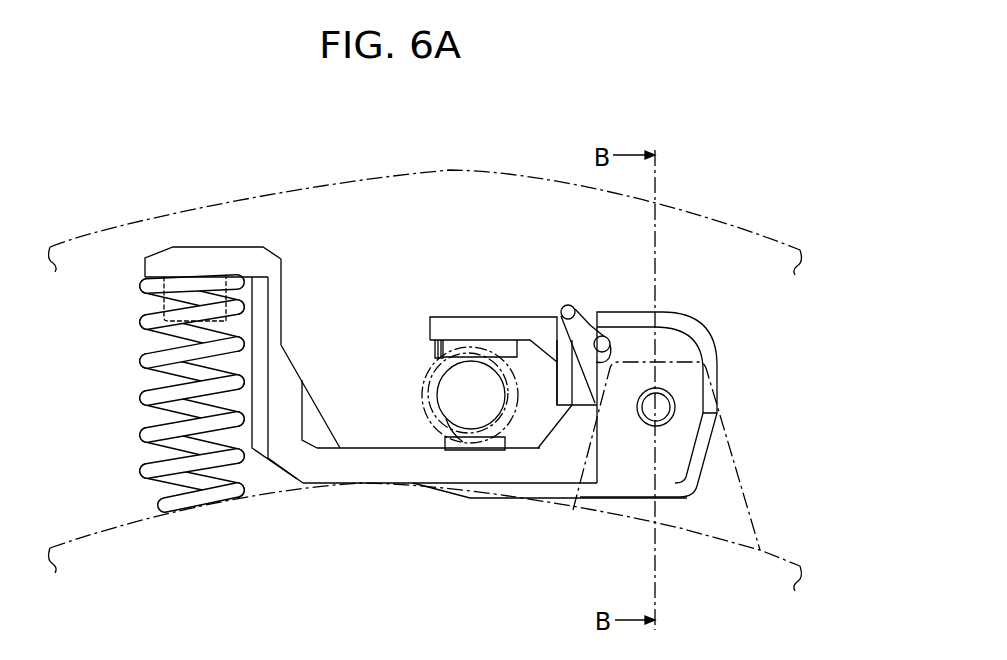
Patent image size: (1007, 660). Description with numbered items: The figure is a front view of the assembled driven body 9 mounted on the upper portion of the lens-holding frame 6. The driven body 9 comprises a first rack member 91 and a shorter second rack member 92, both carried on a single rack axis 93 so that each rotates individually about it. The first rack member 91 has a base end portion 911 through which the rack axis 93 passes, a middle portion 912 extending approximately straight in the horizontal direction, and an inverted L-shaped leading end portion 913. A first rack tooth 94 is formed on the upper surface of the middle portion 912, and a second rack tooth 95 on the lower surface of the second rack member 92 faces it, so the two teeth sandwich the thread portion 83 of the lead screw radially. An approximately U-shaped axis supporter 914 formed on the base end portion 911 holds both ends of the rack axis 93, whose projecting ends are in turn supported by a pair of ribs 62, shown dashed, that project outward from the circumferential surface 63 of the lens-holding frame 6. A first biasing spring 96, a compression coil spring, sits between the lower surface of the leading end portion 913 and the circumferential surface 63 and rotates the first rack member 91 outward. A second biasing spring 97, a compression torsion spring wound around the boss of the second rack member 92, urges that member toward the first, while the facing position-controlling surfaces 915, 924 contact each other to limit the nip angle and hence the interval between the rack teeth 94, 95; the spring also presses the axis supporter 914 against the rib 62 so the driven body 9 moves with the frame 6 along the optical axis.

The lens-holding frame 6 is at (398, 170).
The driven body 9 is at (416, 303).
The rib 62 is at (738, 438).
The circumferential surface 63 is at (100, 528).
The thread portion 83 is at (423, 402).
The first rack member 91 is at (295, 479).
The second rack member 92 is at (496, 320).
The rack axis 93 is at (664, 405).
The first rack tooth 94 is at (462, 436).
The second rack tooth 95 is at (455, 363).
The first biasing spring 96 is at (150, 372).
The second biasing spring 97 is at (574, 318).
The base end portion 911 is at (572, 470).
The middle portion 912 is at (388, 467).
The leading end portion 913 is at (217, 253).
The axis supporter 914 is at (597, 455).
The position-controlling surface 915 is at (560, 417).
The position-controlling surface 924 is at (559, 451).